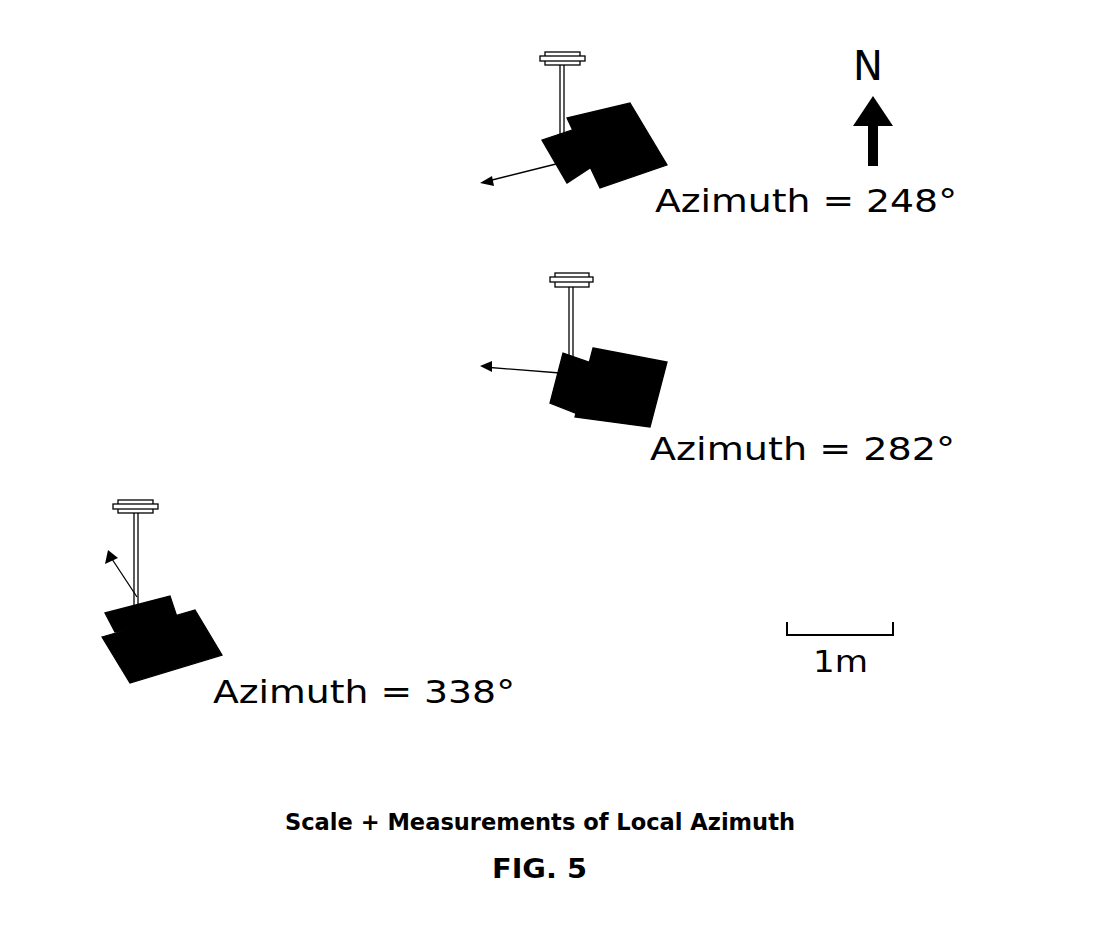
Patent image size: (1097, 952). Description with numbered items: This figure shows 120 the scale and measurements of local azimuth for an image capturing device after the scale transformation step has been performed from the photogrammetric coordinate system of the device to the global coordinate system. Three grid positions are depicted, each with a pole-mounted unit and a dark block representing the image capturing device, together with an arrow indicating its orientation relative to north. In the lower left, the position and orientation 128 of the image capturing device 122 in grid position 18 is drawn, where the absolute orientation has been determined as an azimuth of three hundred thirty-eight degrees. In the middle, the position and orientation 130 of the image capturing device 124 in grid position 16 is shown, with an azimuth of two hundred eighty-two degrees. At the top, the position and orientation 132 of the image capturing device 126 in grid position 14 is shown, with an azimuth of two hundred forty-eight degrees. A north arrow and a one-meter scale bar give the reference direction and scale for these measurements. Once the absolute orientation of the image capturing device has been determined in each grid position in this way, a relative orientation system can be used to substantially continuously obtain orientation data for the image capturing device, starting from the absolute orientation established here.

The grid position 14 is at (563, 52).
The grid position 16 is at (583, 273).
The grid position 18 is at (140, 500).
The scale and measurements of local azimuth 120 is at (170, 775).
The image capturing device 122 is at (212, 625).
The image capturing device 124 is at (597, 420).
The image capturing device 126 is at (645, 125).
The position and orientation 128 is at (145, 597).
The position and orientation 130 is at (583, 363).
The position and orientation 132 is at (560, 178).